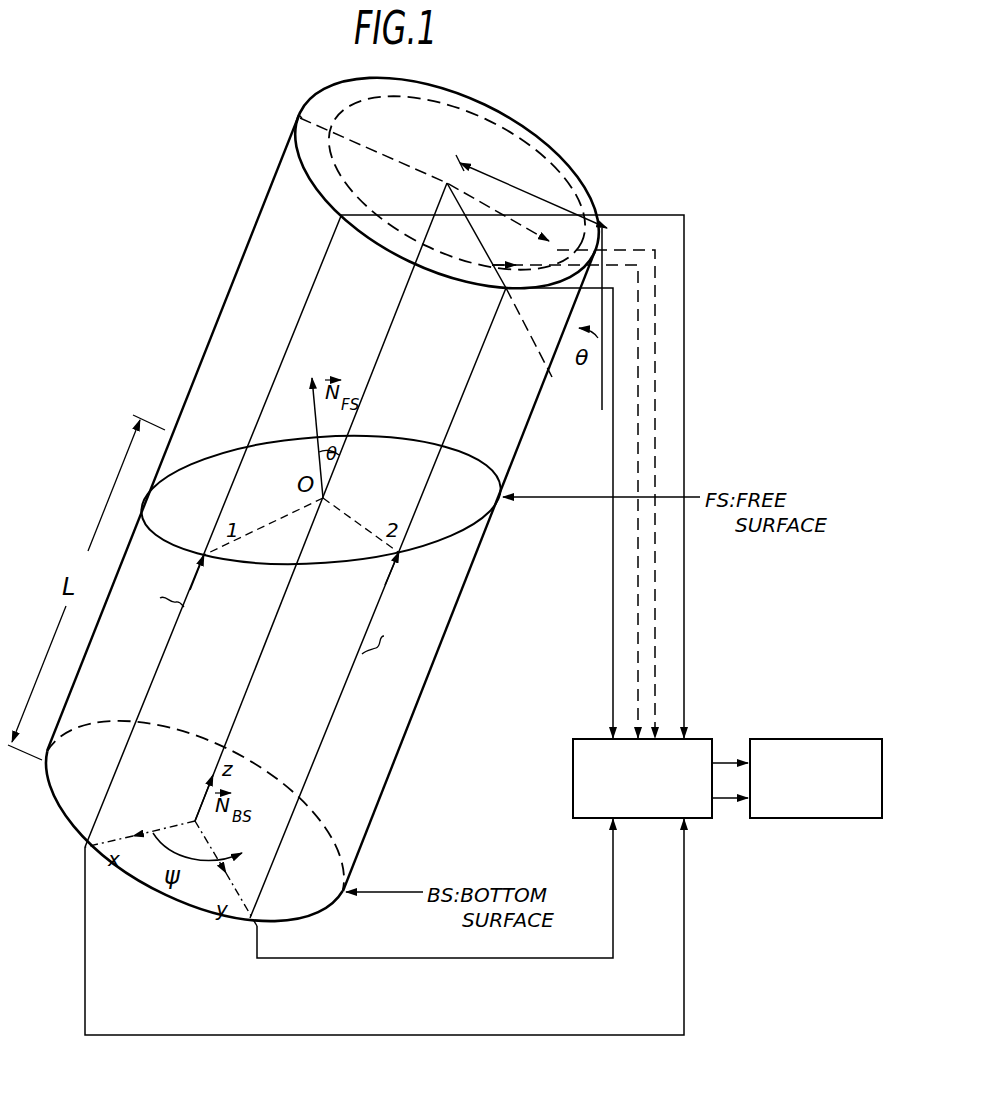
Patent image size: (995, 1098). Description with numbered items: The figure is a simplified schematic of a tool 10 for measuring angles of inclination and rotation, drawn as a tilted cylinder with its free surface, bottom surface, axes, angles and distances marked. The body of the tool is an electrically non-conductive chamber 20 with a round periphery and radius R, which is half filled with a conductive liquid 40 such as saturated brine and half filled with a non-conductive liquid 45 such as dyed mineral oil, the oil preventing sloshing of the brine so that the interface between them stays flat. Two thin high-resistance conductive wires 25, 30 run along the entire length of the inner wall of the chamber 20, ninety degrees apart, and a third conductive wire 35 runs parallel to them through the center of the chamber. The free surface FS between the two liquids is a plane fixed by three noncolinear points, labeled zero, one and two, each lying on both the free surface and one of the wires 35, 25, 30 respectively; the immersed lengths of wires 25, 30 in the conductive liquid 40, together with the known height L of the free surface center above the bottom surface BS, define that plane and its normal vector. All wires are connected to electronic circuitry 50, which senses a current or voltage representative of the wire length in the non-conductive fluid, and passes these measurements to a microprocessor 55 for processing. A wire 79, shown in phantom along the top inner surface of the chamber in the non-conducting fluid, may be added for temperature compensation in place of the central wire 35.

The tool 10 is at (686, 624).
The electrically non-conductive chamber 20 is at (492, 457).
The conductive wire 25 is at (156, 676).
The conductive wire 30 is at (325, 748).
The third conductive wire 35 is at (230, 728).
The conductive liquid 40 is at (336, 645).
The non-conductive liquid 45 is at (362, 327).
The electronic circuitry 50 is at (702, 738).
The microprocessor 55 is at (790, 738).
The wire 79 is at (560, 186).